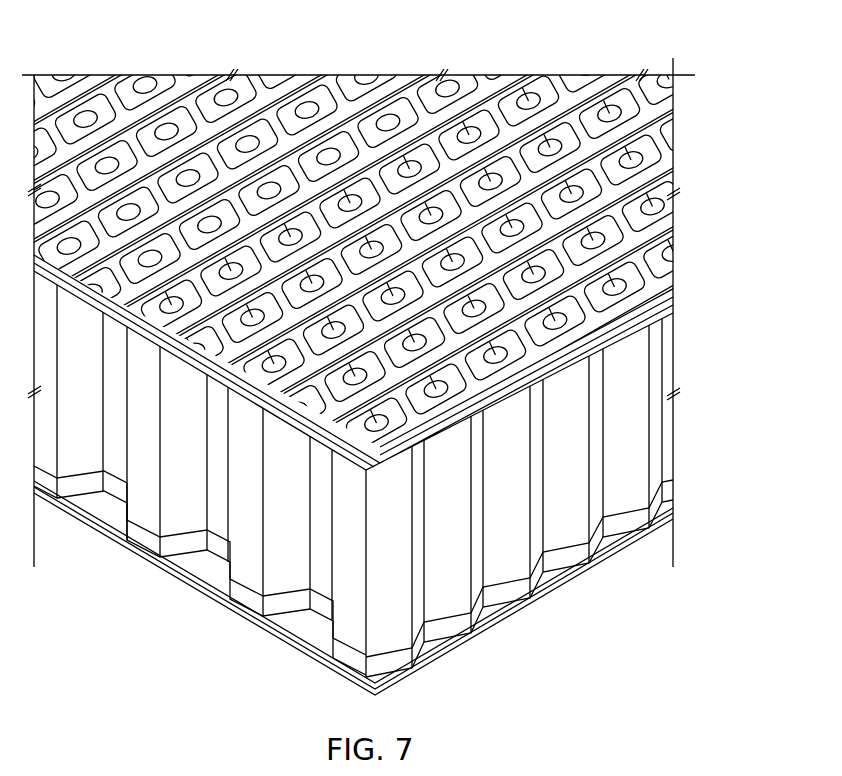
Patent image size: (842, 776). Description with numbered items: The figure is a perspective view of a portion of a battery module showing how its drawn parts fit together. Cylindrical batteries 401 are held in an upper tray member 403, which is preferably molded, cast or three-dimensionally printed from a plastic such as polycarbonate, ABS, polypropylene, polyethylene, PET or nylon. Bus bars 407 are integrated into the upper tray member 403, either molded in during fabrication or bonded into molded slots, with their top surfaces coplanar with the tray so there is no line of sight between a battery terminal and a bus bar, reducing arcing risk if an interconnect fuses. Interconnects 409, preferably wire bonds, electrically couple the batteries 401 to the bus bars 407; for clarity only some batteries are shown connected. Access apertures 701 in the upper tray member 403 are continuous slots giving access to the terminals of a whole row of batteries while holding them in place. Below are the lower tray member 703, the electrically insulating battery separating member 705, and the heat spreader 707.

The batteries 401 is at (332, 143).
The upper tray member 403 is at (573, 344).
The bus bars 407 is at (488, 88).
The interconnects 409 is at (612, 176).
The access apertures 701 is at (123, 253).
The lower tray member 703 is at (145, 538).
The battery separating member 705 is at (243, 547).
The heat spreader 707 is at (307, 628).